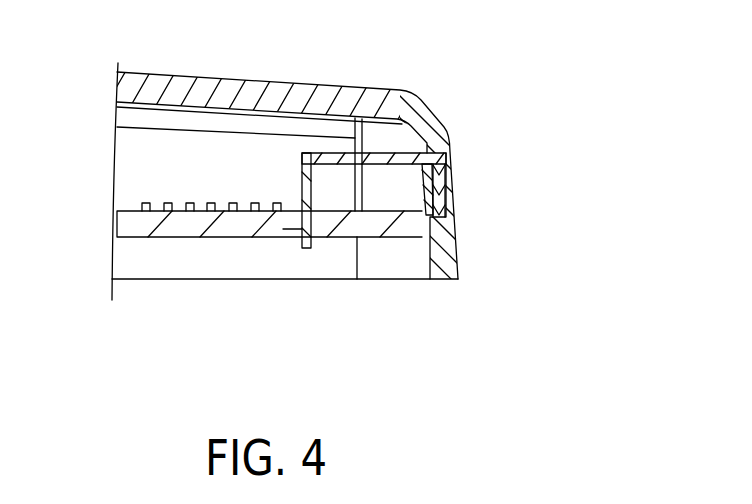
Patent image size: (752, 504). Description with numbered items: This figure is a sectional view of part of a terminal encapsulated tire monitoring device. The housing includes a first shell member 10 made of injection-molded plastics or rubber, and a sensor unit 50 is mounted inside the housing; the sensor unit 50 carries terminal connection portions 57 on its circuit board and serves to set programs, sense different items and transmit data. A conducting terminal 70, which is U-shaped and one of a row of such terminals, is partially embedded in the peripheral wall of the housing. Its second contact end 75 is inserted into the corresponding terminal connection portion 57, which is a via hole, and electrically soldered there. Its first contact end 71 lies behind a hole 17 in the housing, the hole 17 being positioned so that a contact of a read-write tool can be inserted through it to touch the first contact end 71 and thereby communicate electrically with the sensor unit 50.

The first shell member 10 is at (443, 282).
The hole 17 is at (448, 210).
The sensor unit 50 is at (171, 242).
The terminal connection portion 57 is at (267, 308).
The second contact end 75 is at (283, 229).
The conducting terminal 70 is at (328, 142).
The first contact end 71 is at (448, 185).